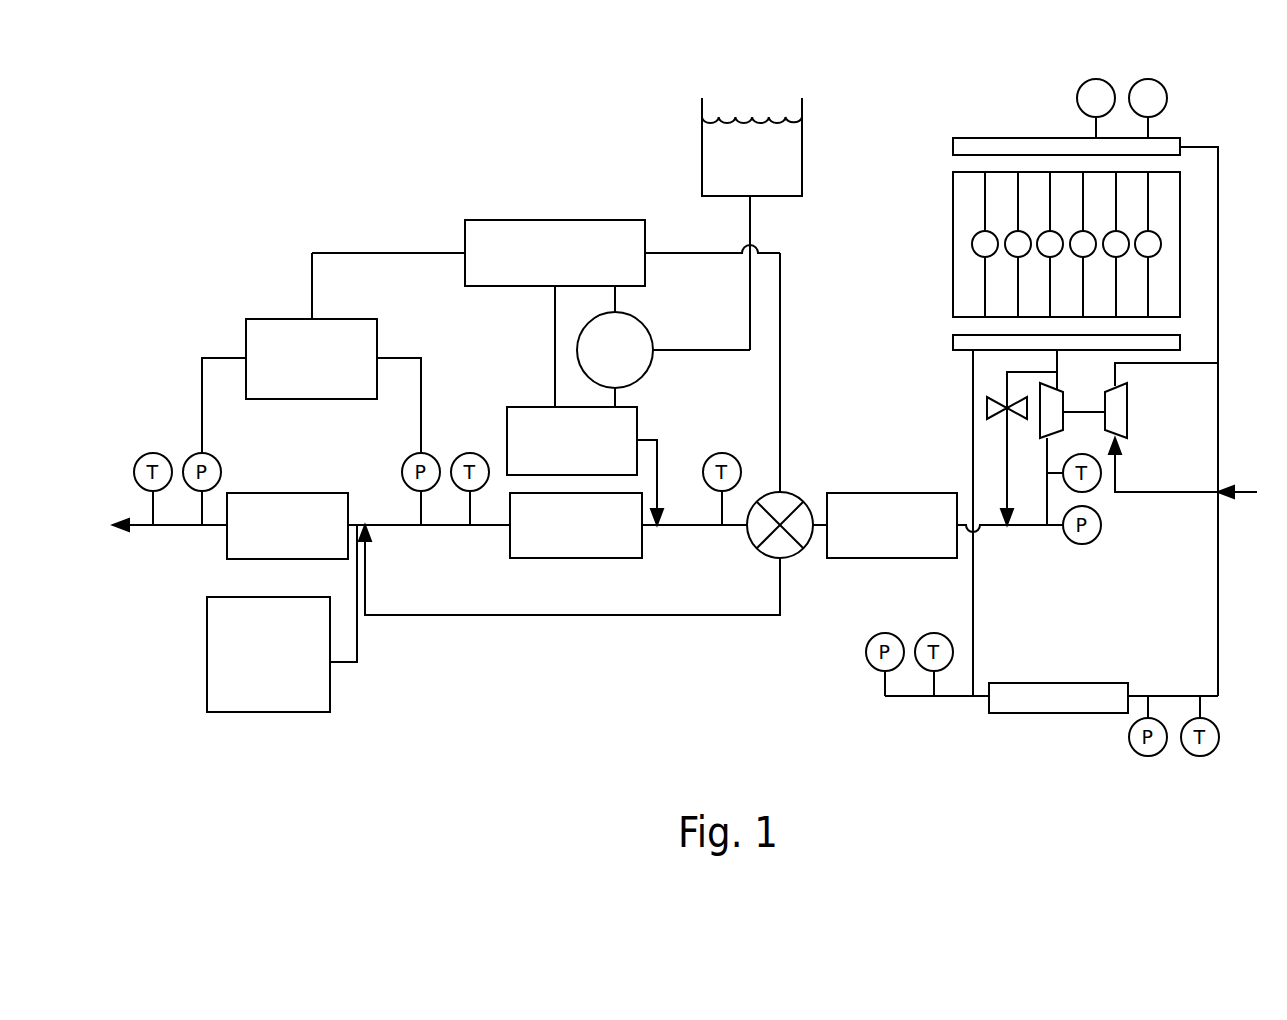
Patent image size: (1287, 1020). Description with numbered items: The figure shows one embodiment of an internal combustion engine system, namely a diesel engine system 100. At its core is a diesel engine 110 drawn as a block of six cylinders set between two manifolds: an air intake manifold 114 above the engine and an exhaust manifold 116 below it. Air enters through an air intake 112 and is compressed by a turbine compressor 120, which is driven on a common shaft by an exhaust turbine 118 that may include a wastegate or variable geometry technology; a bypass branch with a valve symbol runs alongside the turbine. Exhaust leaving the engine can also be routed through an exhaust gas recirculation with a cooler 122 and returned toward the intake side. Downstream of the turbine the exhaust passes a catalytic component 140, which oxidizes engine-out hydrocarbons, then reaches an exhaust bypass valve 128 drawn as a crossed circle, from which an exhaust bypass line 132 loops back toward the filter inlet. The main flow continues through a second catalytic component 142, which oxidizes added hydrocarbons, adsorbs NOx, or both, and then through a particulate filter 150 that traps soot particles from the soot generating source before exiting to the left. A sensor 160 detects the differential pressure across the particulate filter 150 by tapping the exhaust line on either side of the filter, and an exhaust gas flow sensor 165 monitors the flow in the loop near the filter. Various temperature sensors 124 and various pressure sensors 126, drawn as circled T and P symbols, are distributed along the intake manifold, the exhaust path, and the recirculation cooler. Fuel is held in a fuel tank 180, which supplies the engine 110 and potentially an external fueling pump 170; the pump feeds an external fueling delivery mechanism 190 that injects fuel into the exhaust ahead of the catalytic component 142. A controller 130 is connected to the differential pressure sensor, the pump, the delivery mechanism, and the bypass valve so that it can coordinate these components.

The diesel engine system 100 is at (266, 104).
The diesel engine 110 is at (1161, 244).
The air intake 112 is at (1248, 500).
The air intake manifold 114 is at (1017, 138).
The exhaust manifold 116 is at (1090, 353).
The exhaust turbine 118 is at (1040, 428).
The turbine compressor 120 is at (1127, 410).
The exhaust gas recirculation cooler 122 is at (1055, 713).
The temperature sensor 124 is at (1083, 82).
The pressure sensor 126 is at (1167, 98).
The exhaust bypass valve 128 is at (804, 549).
The controller 130 is at (573, 277).
The exhaust bypass line 132 is at (712, 617).
The catalytic component 140 is at (896, 558).
The catalytic component 142 is at (573, 558).
The particulate filter 150 is at (289, 493).
The differential pressure sensor 160 is at (282, 319).
The exhaust gas flow sensor 165 is at (285, 702).
The external fueling pump 170 is at (633, 376).
The fuel tank 180 is at (702, 150).
The external fueling delivery mechanism 190 is at (525, 407).